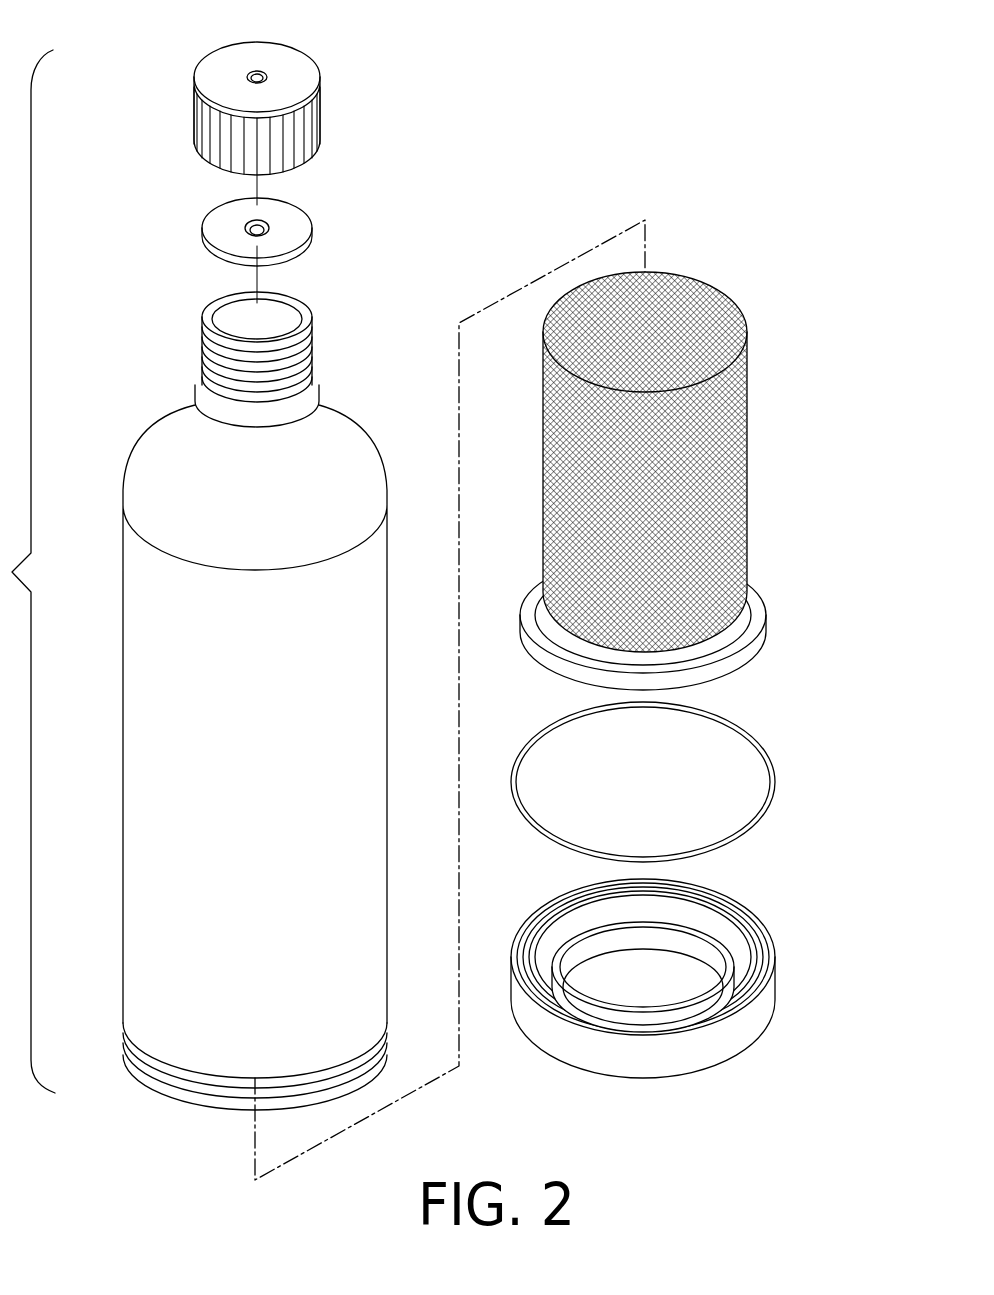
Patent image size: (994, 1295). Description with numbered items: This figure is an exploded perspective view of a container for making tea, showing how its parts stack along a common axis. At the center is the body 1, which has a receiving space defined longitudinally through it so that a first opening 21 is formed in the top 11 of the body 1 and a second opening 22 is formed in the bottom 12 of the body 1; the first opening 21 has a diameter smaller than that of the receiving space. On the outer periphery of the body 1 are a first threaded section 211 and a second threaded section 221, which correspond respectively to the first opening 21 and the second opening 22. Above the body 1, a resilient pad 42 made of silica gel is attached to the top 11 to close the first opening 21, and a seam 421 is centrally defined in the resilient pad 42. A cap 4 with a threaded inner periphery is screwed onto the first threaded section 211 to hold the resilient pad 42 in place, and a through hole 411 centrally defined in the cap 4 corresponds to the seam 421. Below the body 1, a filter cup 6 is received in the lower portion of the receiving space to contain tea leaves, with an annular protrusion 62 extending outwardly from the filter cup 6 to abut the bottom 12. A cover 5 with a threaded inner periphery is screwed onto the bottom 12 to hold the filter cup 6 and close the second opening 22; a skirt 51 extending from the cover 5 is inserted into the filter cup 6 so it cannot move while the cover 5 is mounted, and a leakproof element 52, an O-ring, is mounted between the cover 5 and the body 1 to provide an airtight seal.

The body 1 is at (220, 729).
The top 11 is at (227, 313).
The bottom 12 is at (228, 1127).
The first opening 21 is at (287, 330).
The first threaded section 211 is at (203, 350).
The second opening 22 is at (225, 1113).
The second threaded section 221 is at (143, 1057).
The cap 4 is at (300, 92).
The through hole 411 is at (258, 75).
The resilient pad 42 is at (267, 214).
The seam 421 is at (256, 225).
The cover 5 is at (676, 1039).
The skirt 51 is at (724, 960).
The leakproof element 52 is at (773, 762).
The filter cup 6 is at (770, 474).
The annular protrusion 62 is at (762, 586).